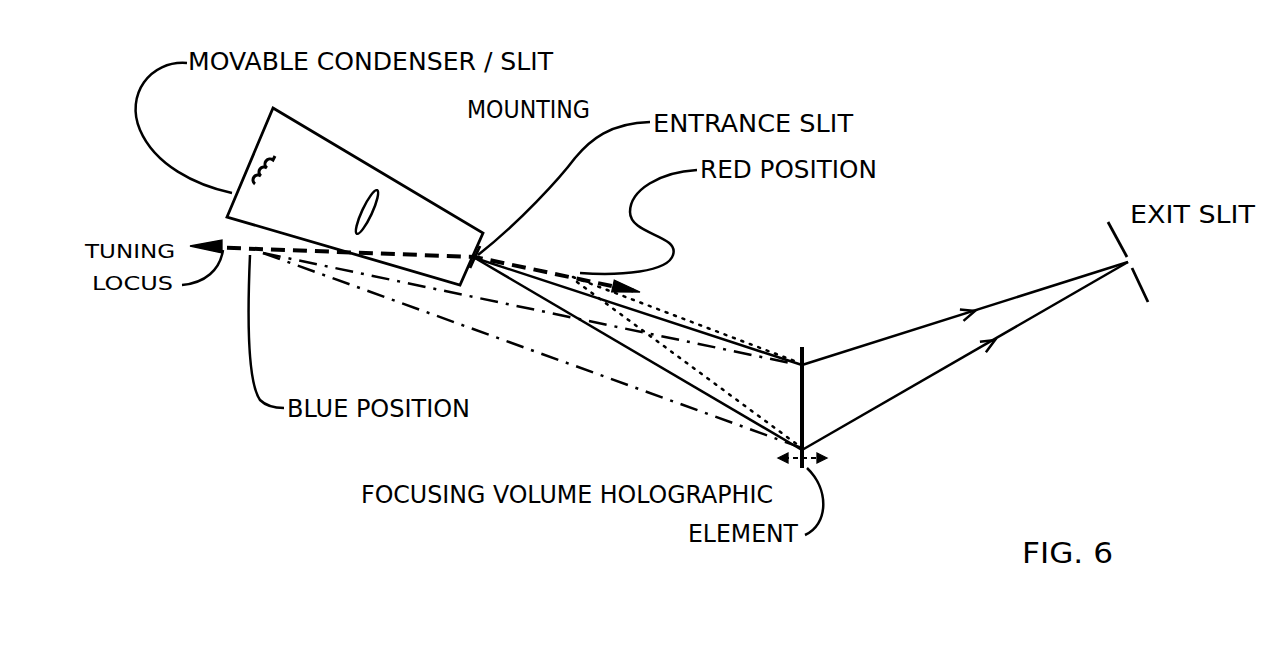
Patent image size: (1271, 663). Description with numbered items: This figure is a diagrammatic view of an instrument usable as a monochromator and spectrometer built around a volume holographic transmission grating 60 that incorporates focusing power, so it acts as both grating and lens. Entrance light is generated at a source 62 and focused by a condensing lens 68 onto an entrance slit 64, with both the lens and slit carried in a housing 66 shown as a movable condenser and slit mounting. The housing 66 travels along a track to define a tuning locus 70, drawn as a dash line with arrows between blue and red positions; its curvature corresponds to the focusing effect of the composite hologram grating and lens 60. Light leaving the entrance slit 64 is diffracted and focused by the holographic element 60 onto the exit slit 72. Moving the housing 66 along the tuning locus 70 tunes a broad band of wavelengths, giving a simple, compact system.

The volume holographic transmission grating 60 is at (801, 345).
The source 62 is at (280, 168).
The entrance slit 64 is at (478, 256).
The housing 66 is at (434, 200).
The condensing lens 68 is at (357, 217).
The tuning locus 70 is at (540, 266).
The exit slit 72 is at (1147, 287).